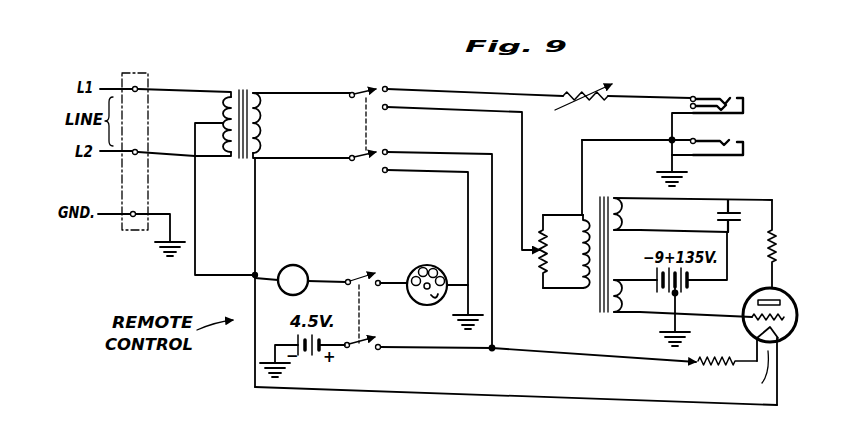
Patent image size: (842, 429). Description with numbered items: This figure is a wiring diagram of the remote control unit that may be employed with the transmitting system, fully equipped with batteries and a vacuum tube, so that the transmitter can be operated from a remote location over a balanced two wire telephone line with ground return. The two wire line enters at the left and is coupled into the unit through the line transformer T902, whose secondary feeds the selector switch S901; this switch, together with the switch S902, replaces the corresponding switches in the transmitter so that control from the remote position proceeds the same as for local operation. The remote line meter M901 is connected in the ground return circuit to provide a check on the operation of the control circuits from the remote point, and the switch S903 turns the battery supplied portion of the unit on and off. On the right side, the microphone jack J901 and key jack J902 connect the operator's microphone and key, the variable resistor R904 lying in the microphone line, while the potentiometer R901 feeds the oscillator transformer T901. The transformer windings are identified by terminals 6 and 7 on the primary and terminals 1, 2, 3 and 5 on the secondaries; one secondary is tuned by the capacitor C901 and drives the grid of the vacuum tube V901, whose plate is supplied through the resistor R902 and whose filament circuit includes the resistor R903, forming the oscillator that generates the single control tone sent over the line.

The line transformer T902 is at (240, 86).
The switch S901 is at (365, 131).
The variable resistor R904 is at (578, 108).
The microphone jack J901 is at (707, 93).
The key jack J902 is at (705, 166).
The potentiometer R901 is at (540, 268).
The oscillator transformer T901 is at (592, 306).
The capacitor C901 is at (701, 216).
The plate resistor R902 is at (778, 238).
The filament resistor R903 is at (727, 350).
The oscillator tube 1H4G V901 is at (792, 334).
The remote line meter M901 is at (296, 263).
The switch S902 is at (432, 264).
The on-off switch S903 is at (372, 312).
The transformer terminal 1 is at (627, 239).
The transformer terminal 2 is at (628, 214).
The transformer terminal 3 is at (627, 303).
The transformer terminal 5 is at (623, 287).
The transformer terminal 6 is at (573, 207).
The transformer terminal 7 is at (574, 298).